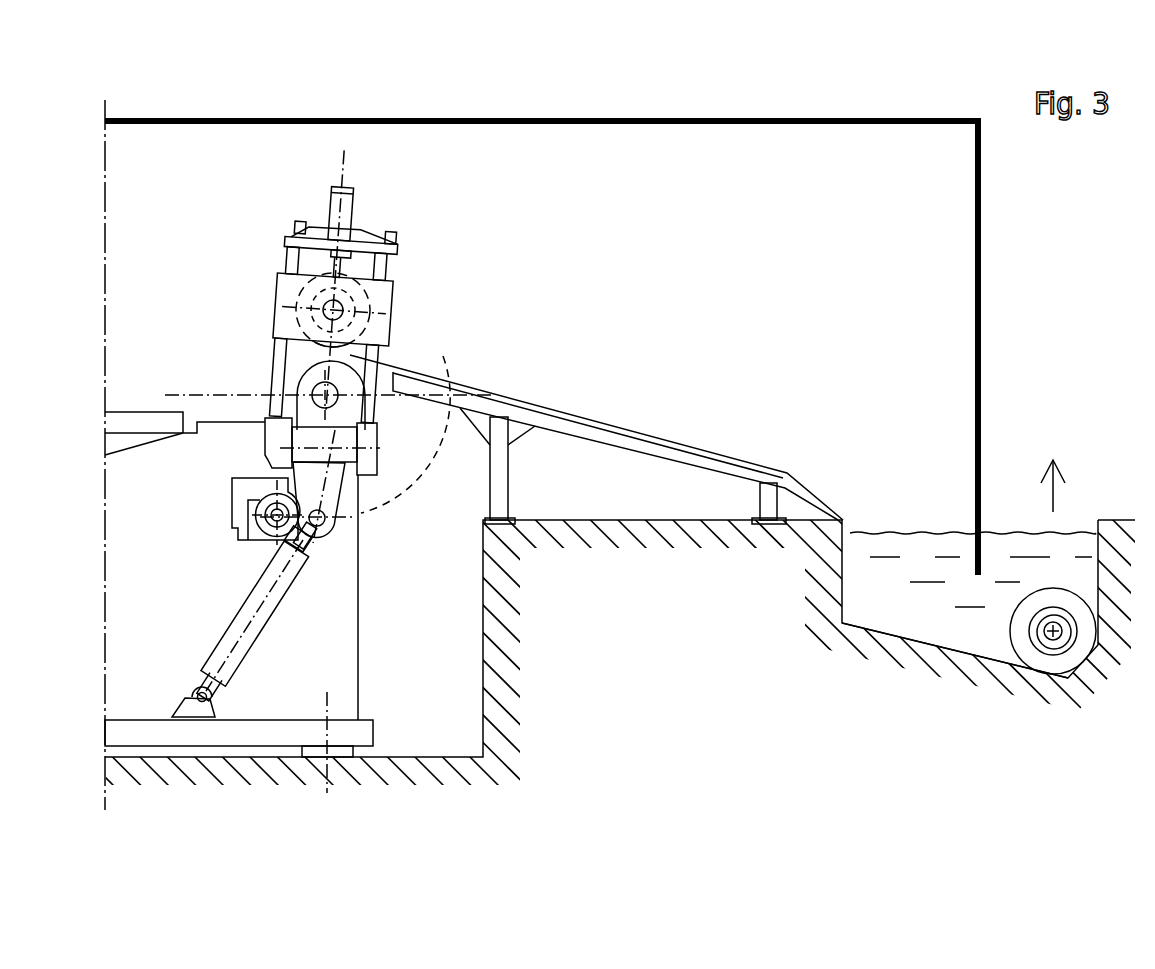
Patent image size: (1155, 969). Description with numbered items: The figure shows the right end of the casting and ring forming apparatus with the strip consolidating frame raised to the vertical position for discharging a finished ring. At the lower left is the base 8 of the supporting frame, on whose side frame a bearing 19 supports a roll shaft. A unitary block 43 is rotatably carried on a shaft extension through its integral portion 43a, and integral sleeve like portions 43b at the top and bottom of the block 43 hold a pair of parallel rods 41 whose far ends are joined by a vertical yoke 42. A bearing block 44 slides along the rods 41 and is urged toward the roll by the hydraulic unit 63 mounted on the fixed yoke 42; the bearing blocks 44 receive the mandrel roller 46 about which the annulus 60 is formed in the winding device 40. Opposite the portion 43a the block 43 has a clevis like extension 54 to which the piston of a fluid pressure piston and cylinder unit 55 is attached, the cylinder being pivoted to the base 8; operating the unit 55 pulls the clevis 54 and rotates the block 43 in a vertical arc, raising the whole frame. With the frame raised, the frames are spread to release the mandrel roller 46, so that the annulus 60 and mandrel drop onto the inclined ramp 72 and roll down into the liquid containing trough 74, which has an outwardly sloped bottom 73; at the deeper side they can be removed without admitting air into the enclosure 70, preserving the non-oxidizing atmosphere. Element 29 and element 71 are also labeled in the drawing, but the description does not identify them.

The base 8 is at (363, 730).
The bearing 19 is at (232, 522).
The support column 29 is at (268, 343).
The winding device 40 is at (425, 313).
The parallel rods 41 is at (381, 273).
The vertical yoke 42 is at (392, 248).
The unitary block 43 is at (345, 448).
The integral portion 43a is at (340, 412).
The sleeve like portion 43b is at (273, 437).
The bearing block 44 is at (377, 341).
The mandrel roller 46 is at (1053, 637).
The clevis like extension 54 is at (333, 527).
The fluid pressure piston and cylinder unit 55 is at (300, 626).
The annulus 60 is at (1027, 647).
The hydraulic unit 63 is at (347, 200).
The enclosure 70 is at (978, 413).
The inclined chute 71 is at (677, 458).
The inclined ramp 72 is at (867, 618).
The outwardly sloped bottom 73 is at (890, 637).
The liquid containing trough 74 is at (875, 599).